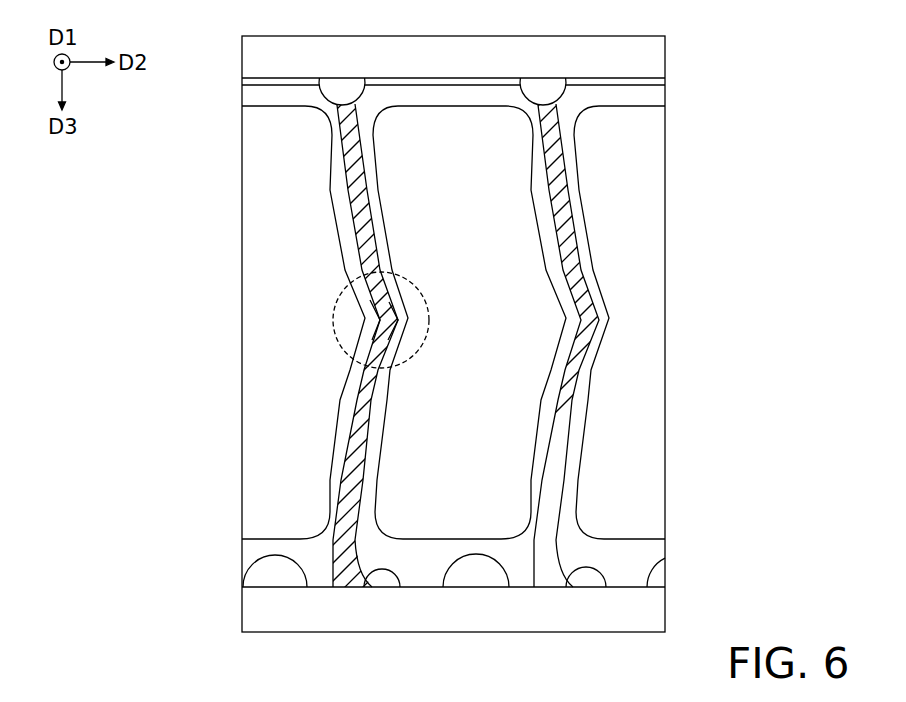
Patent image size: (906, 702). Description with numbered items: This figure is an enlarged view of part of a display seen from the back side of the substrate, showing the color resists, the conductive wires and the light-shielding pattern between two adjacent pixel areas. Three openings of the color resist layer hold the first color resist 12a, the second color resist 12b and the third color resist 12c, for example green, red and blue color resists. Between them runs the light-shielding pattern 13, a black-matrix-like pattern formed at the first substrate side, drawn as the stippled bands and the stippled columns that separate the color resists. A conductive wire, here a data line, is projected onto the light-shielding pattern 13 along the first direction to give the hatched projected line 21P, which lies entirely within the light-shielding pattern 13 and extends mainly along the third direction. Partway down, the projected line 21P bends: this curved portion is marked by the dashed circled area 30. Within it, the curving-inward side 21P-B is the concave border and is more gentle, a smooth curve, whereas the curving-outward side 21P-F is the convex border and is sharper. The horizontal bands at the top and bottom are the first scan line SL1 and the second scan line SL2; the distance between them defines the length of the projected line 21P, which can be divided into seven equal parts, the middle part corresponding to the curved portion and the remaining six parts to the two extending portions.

The projected line 21P is at (362, 193).
The light-shielding pattern 13 is at (347, 223).
The circled area 30 is at (336, 283).
The curving-inward side 21P-B is at (372, 316).
The curving-outward side 21P-F is at (391, 326).
The first color resist 12a is at (304, 418).
The second color resist 12b is at (474, 418).
The third color resist 12c is at (647, 418).
The first scan line SL1 is at (653, 62).
The second scan line SL2 is at (655, 607).